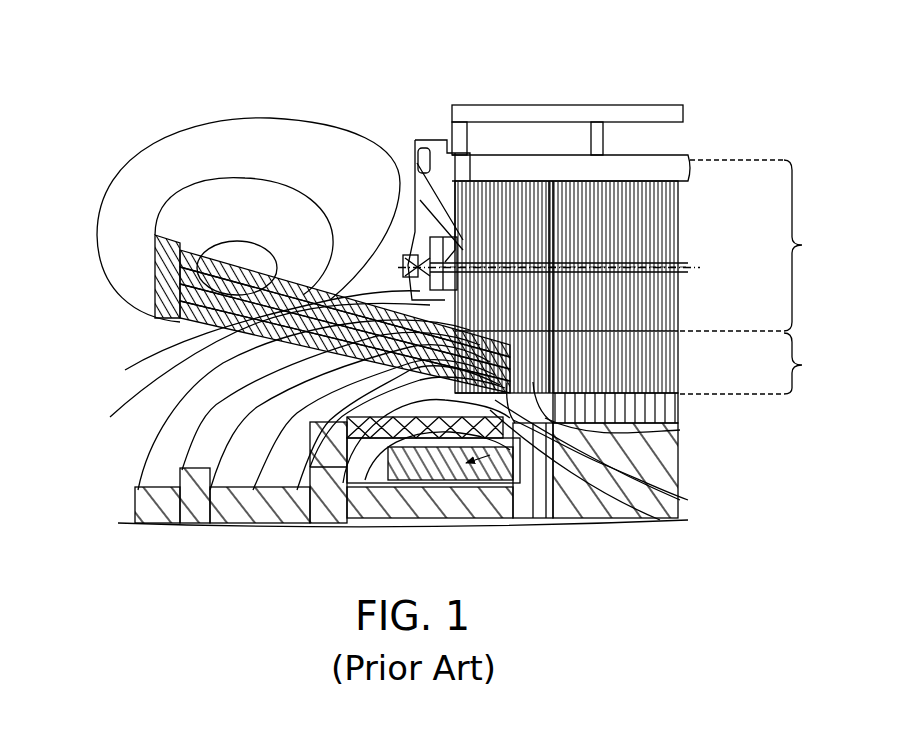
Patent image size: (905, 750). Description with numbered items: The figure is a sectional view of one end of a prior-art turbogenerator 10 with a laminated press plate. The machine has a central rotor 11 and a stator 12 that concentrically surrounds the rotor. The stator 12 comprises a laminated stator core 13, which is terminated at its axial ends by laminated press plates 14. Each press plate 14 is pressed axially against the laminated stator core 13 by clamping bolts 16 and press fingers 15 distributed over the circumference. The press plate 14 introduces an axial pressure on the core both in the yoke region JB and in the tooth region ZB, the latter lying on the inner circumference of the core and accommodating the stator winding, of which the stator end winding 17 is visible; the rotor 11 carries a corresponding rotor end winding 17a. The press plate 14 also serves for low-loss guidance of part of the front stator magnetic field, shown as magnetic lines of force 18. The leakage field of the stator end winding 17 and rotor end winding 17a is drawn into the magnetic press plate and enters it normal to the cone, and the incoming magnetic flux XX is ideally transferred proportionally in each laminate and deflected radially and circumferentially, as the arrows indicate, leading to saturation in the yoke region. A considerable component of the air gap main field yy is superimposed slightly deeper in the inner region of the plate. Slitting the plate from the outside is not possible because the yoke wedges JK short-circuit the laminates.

The turbogenerator 10 is at (359, 305).
The rotor 11 is at (663, 502).
The stator 12 is at (698, 219).
The laminated stator core 13 is at (664, 369).
The laminated press plate 14 is at (507, 190).
The press finger 15 is at (413, 155).
The clamping bolt 16 is at (680, 278).
The stator end winding 17 is at (165, 308).
The rotor end winding 17a is at (678, 513).
The magnetic lines of force 18 is at (100, 213).
The incoming magnetic flux XX is at (412, 263).
The air gap main field yy is at (678, 447).
The yoke wedge JK is at (668, 163).
The yoke region JB is at (756, 245).
The tooth region ZB is at (759, 363).